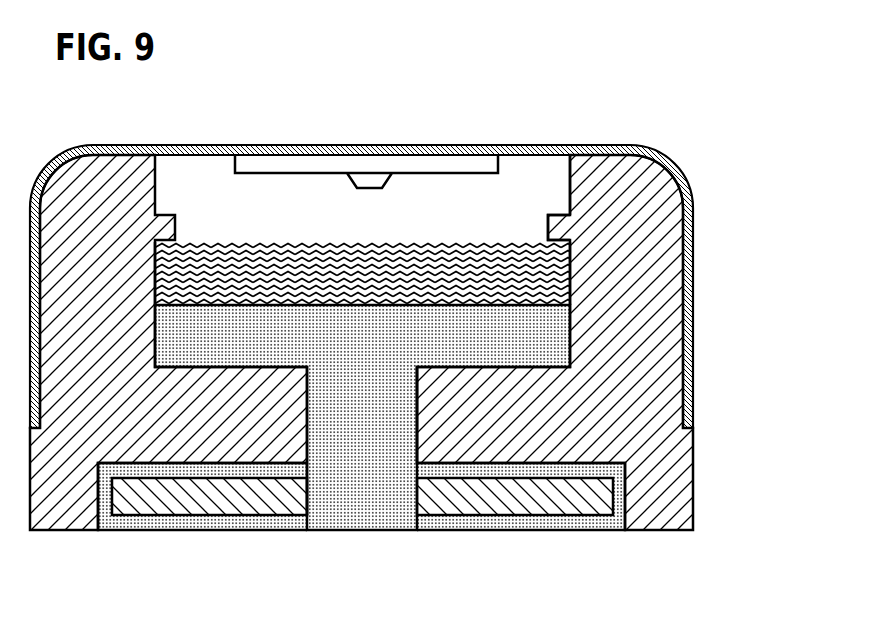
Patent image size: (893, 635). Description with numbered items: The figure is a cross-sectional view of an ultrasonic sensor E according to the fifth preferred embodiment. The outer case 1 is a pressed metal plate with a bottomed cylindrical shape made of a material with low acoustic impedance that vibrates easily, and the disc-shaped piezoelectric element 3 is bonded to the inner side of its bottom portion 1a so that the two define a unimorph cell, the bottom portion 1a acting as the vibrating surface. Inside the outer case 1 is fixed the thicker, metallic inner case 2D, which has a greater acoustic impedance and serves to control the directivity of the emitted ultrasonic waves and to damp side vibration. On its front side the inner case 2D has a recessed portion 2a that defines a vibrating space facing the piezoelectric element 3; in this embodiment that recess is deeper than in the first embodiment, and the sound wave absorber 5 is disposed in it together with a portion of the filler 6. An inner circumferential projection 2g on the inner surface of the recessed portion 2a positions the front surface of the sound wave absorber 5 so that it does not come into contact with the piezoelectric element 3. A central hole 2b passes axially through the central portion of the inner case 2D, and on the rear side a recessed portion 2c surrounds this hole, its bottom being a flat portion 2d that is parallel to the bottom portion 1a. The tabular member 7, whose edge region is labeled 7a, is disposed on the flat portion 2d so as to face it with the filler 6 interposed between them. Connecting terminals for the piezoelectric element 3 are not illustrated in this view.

The ultrasonic sensor E is at (696, 143).
The outer case 1 is at (693, 205).
The bottom portion 1a is at (335, 145).
The inner case 2D is at (668, 381).
The recessed portion 2a is at (570, 175).
The central hole 2b is at (414, 433).
The recessed portion 2c is at (620, 518).
The flat portion 2d is at (521, 463).
The inner circumferential projection 2g is at (548, 226).
The piezoelectric element 3 is at (433, 167).
The sound wave absorber 5 is at (277, 240).
The filler 6 is at (346, 507).
The tabular member 7 is at (187, 507).
The terminal edge portion 7a is at (312, 508).